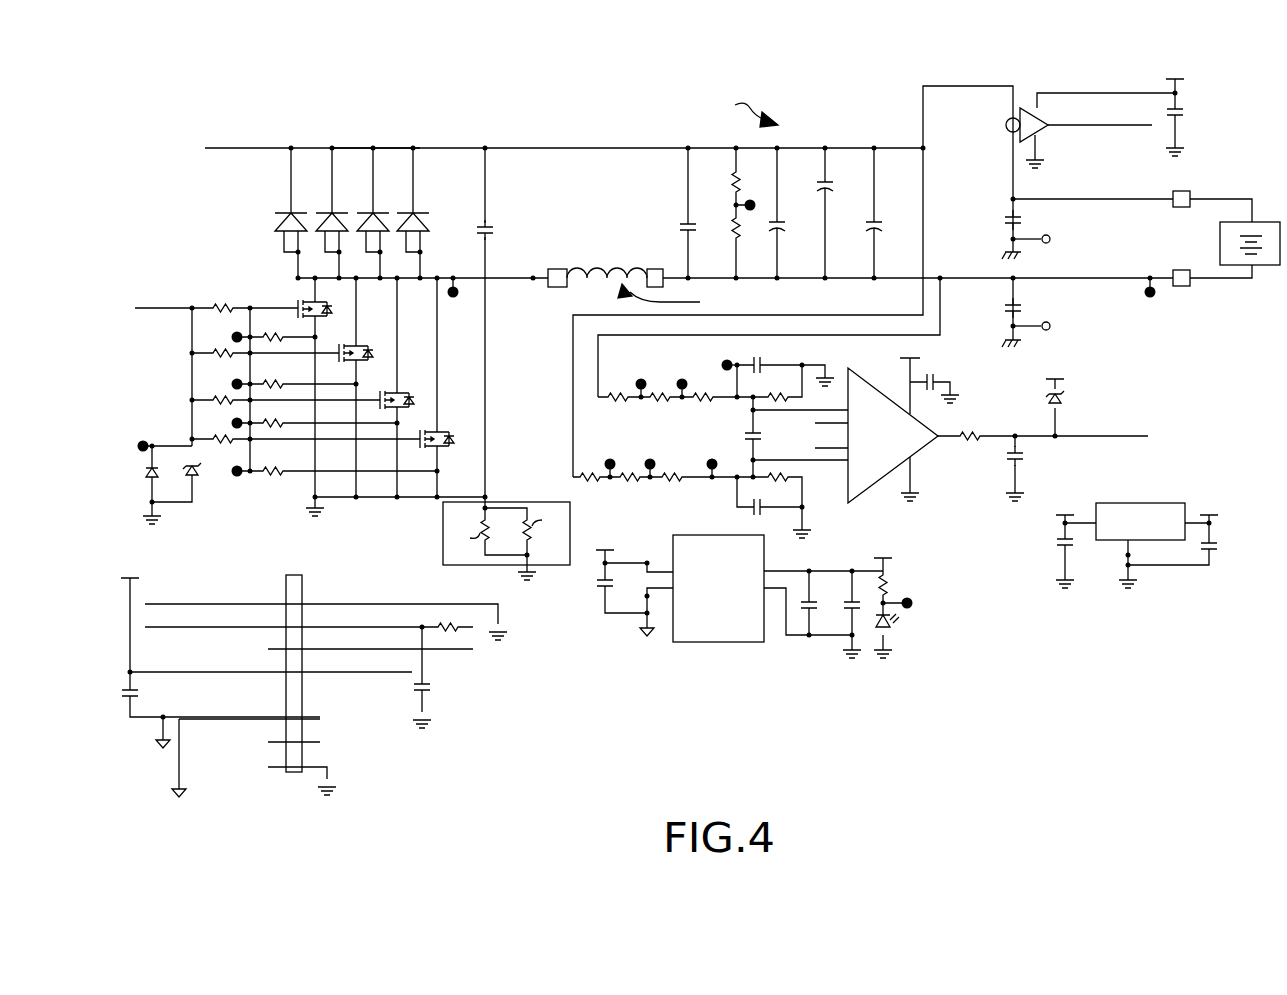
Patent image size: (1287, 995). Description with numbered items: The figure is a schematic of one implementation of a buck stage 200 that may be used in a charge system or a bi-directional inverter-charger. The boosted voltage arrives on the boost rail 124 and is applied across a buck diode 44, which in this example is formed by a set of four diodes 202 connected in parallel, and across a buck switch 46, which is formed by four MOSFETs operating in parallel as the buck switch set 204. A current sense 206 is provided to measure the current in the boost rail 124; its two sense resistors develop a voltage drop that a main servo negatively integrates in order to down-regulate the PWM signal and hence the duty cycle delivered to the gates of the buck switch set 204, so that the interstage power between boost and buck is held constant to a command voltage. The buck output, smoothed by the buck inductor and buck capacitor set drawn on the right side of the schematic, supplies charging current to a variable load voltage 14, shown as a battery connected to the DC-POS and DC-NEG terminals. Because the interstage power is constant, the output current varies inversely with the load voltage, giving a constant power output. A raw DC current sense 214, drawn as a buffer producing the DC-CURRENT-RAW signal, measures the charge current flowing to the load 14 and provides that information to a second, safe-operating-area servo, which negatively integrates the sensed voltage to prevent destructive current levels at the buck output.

The buck stage 200 is at (597, 68).
The boost rail 124 is at (535, 148).
The set of four diodes 202 is at (327, 171).
The buck diode 44 is at (262, 216).
The buck switch set 204 is at (301, 438).
The buck switch 46 is at (168, 370).
The current sense 206 is at (553, 570).
The raw DC current sense 214 is at (985, 127).
The variable load voltage 14 is at (1258, 265).